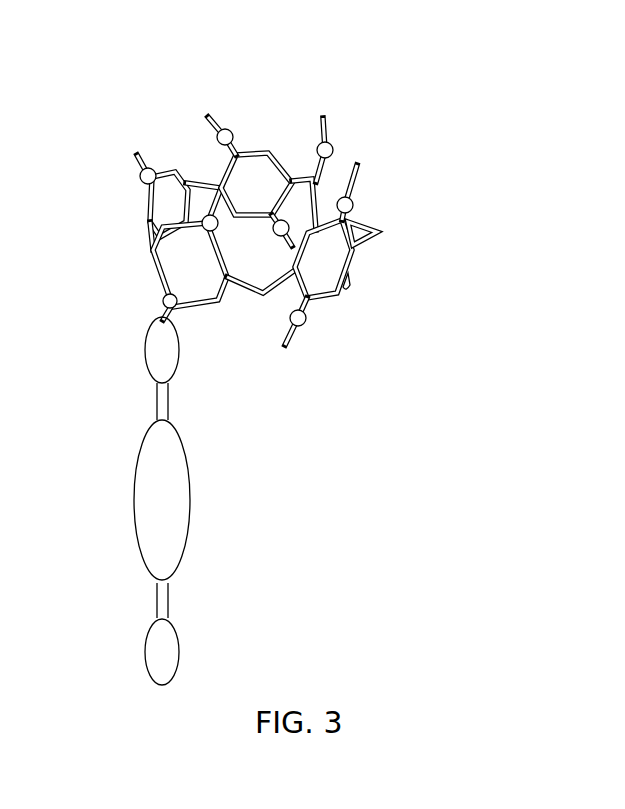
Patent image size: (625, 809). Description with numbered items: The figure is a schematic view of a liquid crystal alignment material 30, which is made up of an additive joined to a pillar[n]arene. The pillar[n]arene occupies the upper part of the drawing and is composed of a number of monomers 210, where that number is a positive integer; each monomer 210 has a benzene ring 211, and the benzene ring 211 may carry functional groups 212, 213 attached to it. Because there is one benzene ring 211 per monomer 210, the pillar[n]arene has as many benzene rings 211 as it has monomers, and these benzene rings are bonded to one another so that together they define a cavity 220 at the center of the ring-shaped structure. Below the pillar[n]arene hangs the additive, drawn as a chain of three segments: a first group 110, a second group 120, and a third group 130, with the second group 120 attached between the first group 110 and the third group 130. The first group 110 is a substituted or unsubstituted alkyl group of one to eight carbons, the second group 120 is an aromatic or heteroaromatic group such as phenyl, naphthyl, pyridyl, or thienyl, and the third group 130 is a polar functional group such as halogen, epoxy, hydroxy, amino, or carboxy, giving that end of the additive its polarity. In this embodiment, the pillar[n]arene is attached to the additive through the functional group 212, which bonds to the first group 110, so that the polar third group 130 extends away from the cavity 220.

The liquid crystal alignment material 30 is at (256, 70).
The monomer 210 is at (422, 249).
The benzene ring 211 is at (322, 268).
The functional group 212 is at (307, 318).
The functional group 213 is at (401, 192).
The cavity 220 is at (257, 255).
The first group 110 is at (162, 350).
The second group 120 is at (160, 500).
The third group 130 is at (160, 650).